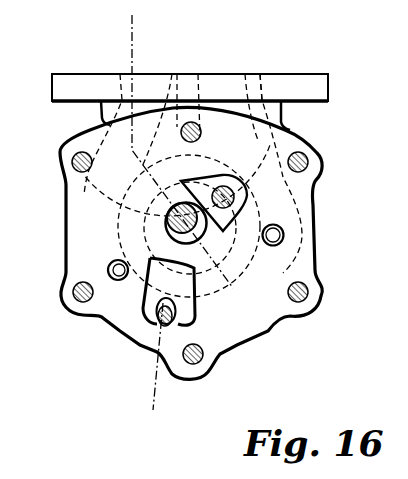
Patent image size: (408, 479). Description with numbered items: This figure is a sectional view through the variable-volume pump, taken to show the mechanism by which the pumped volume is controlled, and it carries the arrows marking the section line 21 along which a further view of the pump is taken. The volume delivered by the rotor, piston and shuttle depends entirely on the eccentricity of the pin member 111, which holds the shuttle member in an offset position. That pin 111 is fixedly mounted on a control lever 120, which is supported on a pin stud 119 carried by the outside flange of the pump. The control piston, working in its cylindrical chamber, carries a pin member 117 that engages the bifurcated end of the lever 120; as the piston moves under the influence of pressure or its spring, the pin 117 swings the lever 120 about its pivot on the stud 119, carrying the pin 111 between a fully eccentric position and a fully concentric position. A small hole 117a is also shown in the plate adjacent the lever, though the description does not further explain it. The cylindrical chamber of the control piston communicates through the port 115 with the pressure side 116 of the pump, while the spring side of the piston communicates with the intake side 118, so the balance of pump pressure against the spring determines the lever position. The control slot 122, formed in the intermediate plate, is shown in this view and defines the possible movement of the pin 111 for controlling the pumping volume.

The section line 21— 21 is at (152, 48).
The pin member 111 is at (168, 212).
The port 115 is at (108, 269).
The pressure side 116 is at (168, 78).
The pin member 117 is at (159, 318).
The hole 117a is at (284, 235).
The intake side 118 is at (243, 78).
The pin stud 119 is at (235, 196).
The control lever 120 is at (149, 259).
The control slot 122 is at (167, 229).